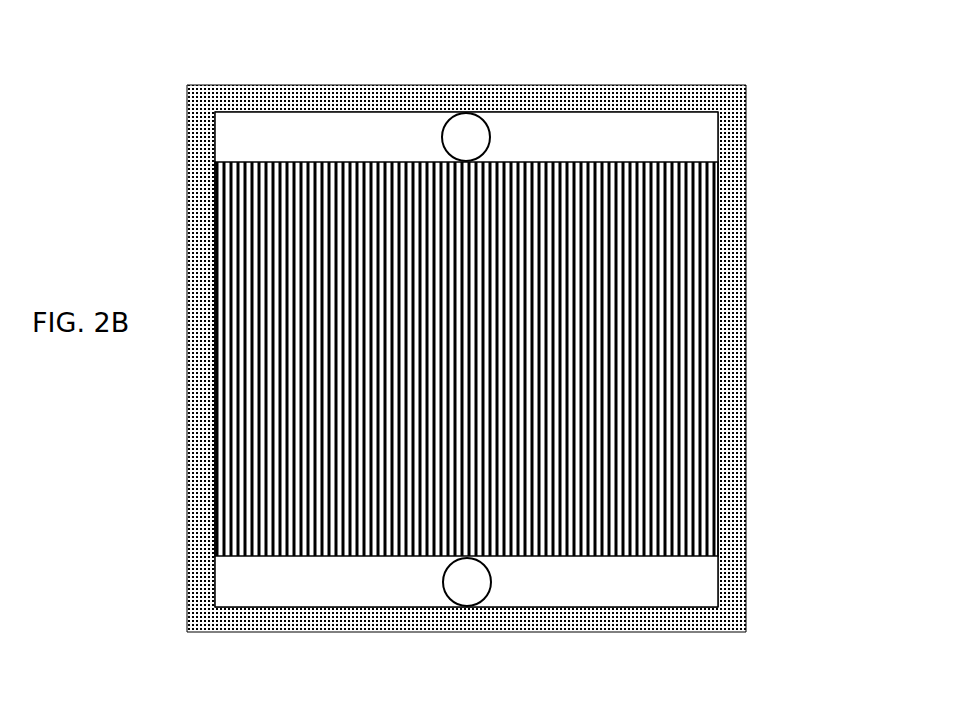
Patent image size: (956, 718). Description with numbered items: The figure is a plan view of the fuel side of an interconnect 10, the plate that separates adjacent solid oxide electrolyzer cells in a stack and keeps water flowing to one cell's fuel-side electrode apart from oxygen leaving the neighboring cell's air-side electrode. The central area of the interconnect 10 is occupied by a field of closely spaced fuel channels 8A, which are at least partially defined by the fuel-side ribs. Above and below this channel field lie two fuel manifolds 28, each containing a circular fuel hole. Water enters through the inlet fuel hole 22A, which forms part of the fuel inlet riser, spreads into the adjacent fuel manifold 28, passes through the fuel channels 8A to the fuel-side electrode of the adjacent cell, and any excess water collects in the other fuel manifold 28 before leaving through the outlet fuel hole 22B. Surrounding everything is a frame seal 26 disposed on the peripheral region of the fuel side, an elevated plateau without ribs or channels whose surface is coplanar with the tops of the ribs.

The interconnect 10 is at (139, 204).
The frame seal 26 is at (745, 478).
The fuel manifold 28 is at (720, 135).
The fuel channels 8A is at (667, 348).
The inlet fuel hole 22A is at (466, 113).
The outlet fuel hole 22B is at (467, 606).